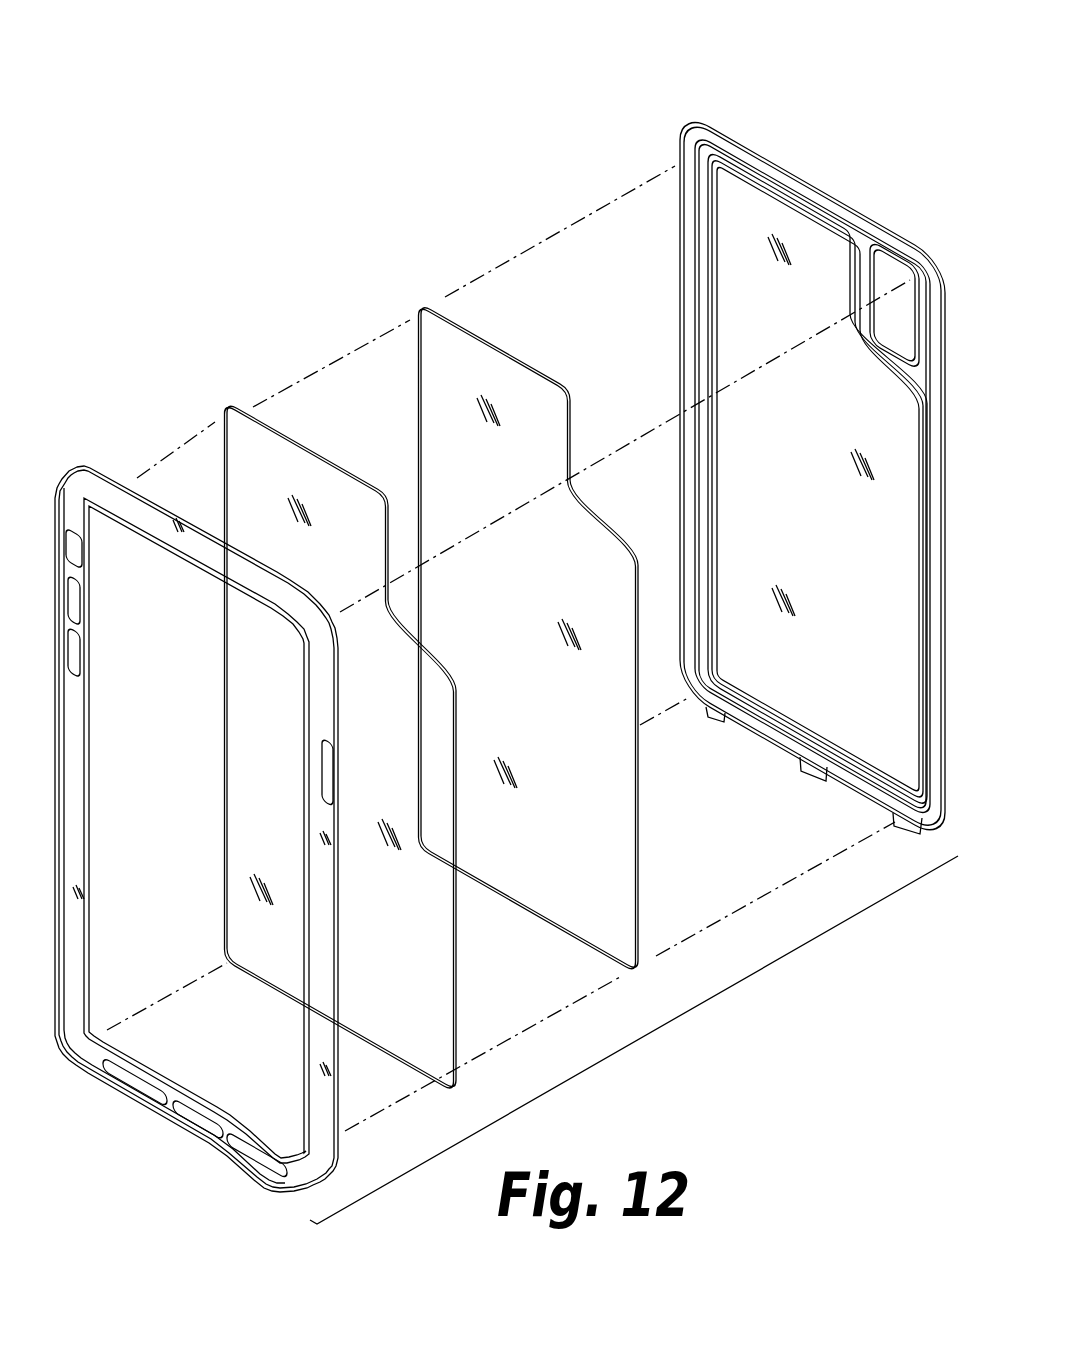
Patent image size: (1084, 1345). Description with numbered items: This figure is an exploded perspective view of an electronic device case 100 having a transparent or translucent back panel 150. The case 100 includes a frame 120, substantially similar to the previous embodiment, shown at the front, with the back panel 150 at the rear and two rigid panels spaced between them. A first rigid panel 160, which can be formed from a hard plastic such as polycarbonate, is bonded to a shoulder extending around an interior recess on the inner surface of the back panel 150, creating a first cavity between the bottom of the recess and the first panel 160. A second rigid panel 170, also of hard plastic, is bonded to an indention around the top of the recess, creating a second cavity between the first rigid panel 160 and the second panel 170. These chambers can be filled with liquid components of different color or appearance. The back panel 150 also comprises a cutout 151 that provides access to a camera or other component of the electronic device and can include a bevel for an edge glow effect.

The electronic device case 100 is at (674, 1032).
The frame 120 is at (71, 453).
The back panel 150 is at (678, 107).
The cutout 151 is at (896, 326).
The first rigid panel 160 is at (418, 296).
The second rigid panel 170 is at (228, 397).